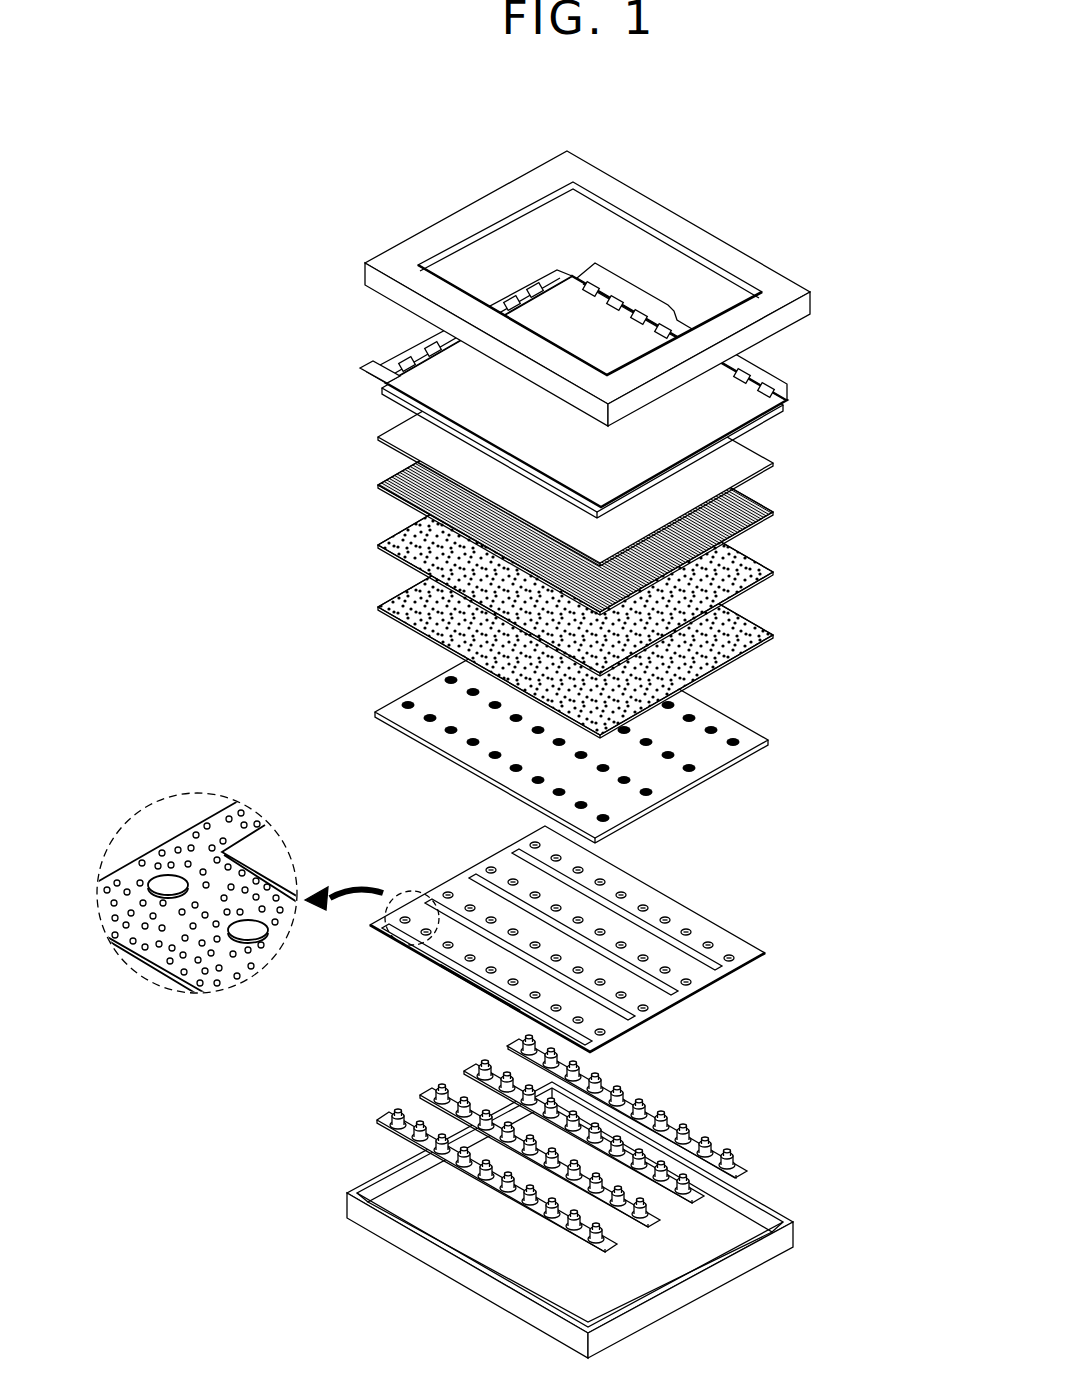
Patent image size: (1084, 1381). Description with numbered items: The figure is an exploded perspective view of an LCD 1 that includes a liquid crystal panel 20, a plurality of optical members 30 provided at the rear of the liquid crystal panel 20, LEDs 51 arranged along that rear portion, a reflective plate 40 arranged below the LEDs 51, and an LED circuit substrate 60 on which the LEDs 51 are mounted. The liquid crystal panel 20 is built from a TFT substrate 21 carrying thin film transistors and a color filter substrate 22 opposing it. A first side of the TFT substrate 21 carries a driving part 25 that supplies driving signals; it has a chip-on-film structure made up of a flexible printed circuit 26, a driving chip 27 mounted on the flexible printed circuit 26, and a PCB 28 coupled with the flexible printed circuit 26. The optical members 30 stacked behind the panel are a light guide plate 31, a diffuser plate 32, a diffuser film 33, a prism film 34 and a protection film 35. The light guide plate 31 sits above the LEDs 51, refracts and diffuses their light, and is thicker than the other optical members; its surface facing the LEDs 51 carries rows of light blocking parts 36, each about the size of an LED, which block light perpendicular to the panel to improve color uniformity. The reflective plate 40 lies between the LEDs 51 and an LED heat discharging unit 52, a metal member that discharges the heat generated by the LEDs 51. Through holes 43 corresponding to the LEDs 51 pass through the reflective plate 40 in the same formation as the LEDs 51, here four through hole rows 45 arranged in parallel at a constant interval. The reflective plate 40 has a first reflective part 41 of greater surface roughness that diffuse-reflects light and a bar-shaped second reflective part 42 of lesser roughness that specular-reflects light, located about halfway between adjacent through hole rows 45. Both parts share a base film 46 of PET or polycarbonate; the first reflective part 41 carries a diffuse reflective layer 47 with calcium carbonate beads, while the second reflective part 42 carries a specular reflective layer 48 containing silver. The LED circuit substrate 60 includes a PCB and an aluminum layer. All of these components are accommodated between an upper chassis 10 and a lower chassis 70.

The LCD 1 is at (270, 214).
The upper chassis 10 is at (812, 293).
The liquid crystal panel 20 is at (649, 390).
The TFT substrate 21 is at (789, 404).
The color filter substrate 22 is at (789, 393).
The driving part 25 is at (395, 340).
The flexible printed circuit 26 is at (368, 373).
The driving chip 27 is at (400, 362).
The PCB 28 is at (407, 348).
The optical members 30 is at (645, 590).
The light guide plate 31 is at (621, 728).
The diffuser plate 32 is at (775, 636).
The diffuser film 33 is at (775, 572).
The prism film 34 is at (775, 512).
The protection film 35 is at (623, 451).
The light blocking parts 36 is at (717, 731).
The reflective plate 40 is at (475, 909).
The first reflective part 41 is at (767, 954).
The second reflective part 42 is at (718, 970).
The through hole 43 is at (692, 933).
The through hole rows 45 is at (487, 990).
The base film 46 is at (155, 968).
The diffuse reflective layer 47 is at (146, 857).
The specular reflective layer 48 is at (280, 851).
The LEDs 51 is at (396, 1114).
The LED heat discharging unit 52 is at (380, 1123).
The LED circuit substrate 60 is at (583, 1143).
The lower chassis 70 is at (767, 1251).